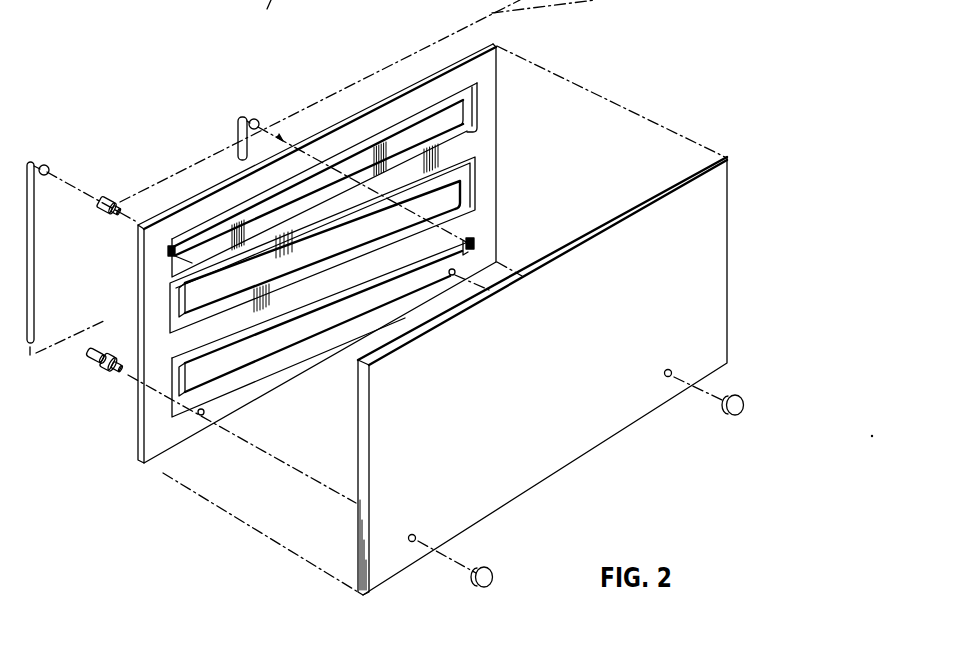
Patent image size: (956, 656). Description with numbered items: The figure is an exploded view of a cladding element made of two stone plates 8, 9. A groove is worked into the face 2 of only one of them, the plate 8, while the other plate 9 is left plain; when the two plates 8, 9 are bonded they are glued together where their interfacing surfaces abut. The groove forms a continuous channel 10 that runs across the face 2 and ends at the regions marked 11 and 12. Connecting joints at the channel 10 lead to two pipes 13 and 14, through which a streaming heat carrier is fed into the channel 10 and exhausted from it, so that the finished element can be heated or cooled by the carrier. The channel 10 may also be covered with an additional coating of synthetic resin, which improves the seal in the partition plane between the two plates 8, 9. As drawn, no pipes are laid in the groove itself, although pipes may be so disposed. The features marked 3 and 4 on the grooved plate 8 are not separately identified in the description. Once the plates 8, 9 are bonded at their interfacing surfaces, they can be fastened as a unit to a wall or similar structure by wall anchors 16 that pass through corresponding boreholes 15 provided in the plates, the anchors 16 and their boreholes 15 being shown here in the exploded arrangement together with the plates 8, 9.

The face 2 is at (397, 107).
The slot opening 3 is at (447, 212).
The slot end frame 4 is at (470, 110).
The stone plate 8 is at (497, 82).
The stone plate 9 is at (639, 421).
The channel 10 is at (214, 228).
The end region of channel 11 is at (168, 250).
The end region of channel 12 is at (475, 243).
The pipe 13 is at (42, 166).
The pipe 14 is at (249, 122).
The borehole 15 is at (201, 416).
The wall anchor 16 is at (96, 355).